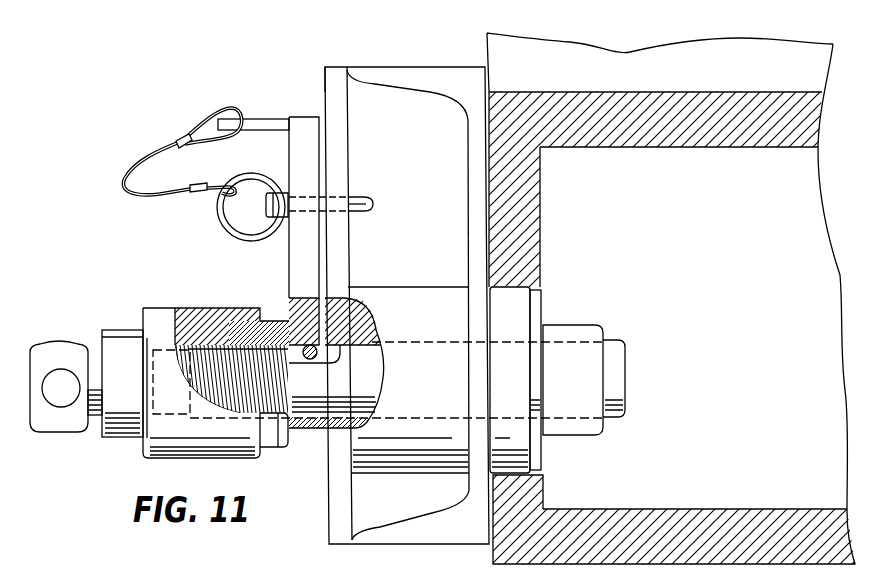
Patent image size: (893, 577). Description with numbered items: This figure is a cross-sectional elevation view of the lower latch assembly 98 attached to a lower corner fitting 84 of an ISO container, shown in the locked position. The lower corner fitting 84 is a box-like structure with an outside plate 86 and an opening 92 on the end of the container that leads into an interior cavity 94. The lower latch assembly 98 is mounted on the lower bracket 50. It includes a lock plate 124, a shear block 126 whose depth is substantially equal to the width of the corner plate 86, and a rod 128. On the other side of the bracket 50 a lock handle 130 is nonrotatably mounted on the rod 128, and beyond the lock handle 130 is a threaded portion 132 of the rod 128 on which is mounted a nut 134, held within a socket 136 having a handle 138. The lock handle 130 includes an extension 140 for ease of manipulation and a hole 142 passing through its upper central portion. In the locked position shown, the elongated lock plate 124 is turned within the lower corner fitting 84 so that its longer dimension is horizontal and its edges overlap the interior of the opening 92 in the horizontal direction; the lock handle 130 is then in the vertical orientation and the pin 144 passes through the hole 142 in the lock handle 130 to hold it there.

The lower bracket 50 is at (325, 92).
The lower corner fitting 84 is at (700, 143).
The outside plate 86 is at (535, 205).
The opening 92 is at (534, 297).
The interior cavity 94 is at (742, 321).
The lower latch assembly 98 is at (460, 45).
The lock plate 124 is at (597, 363).
The shear block 126 is at (512, 321).
The rod 128 is at (623, 403).
The lock handle 130 is at (290, 168).
The threaded portion 132 is at (268, 418).
The nut 134 is at (273, 315).
The socket 136 is at (160, 312).
The handle 138 is at (70, 343).
The extension 140 is at (253, 121).
The hole 142 is at (312, 214).
The pin 144 is at (370, 197).